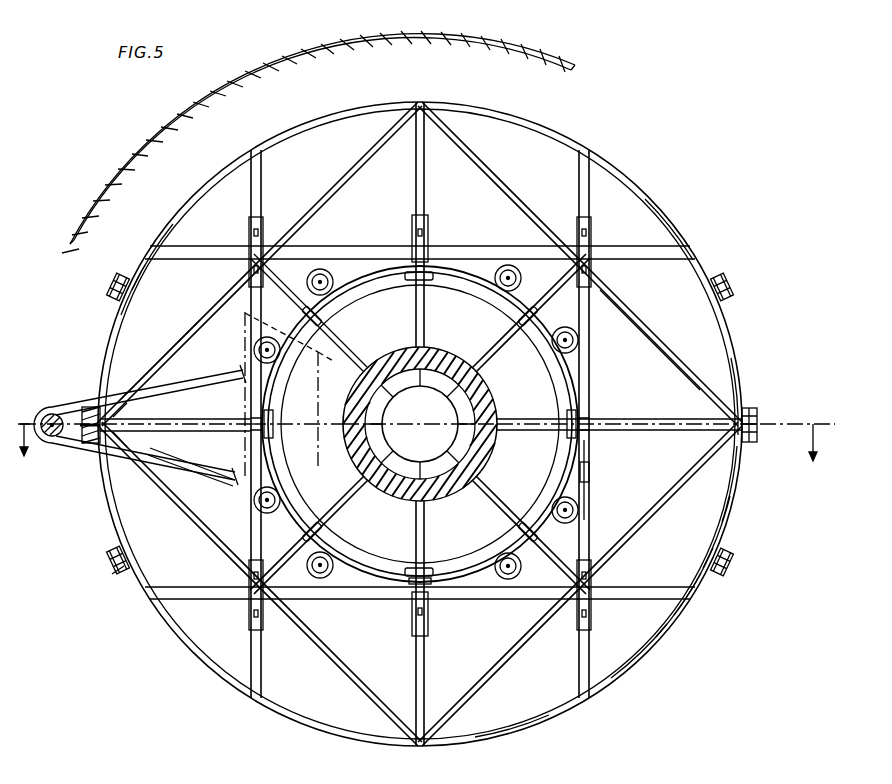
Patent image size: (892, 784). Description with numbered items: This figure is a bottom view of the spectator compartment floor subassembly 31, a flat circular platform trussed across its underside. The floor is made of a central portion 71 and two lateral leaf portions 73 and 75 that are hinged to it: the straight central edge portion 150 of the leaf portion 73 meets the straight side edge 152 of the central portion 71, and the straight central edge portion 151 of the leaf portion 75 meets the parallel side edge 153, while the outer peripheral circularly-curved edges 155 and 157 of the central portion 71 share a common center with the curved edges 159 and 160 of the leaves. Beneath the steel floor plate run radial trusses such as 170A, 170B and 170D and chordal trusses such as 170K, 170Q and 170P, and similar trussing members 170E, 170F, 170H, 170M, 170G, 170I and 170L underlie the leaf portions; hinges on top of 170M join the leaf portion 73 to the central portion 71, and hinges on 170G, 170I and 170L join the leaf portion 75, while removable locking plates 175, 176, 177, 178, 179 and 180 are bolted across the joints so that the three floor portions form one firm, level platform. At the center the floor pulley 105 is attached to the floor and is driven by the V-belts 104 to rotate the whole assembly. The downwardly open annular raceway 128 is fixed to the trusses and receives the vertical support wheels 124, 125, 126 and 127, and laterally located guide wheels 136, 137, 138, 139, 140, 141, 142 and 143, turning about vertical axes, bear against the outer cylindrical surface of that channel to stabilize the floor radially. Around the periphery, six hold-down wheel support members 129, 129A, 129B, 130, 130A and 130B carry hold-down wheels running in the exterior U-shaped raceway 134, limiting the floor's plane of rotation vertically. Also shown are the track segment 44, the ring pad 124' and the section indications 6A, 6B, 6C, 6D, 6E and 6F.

The arcuate track segment 44 is at (399, 34).
The outer peripheral circularly-curved edge 159 is at (592, 120).
The spectator compartment floor subassembly 31 is at (150, 611).
The outer peripheral circularly-curved edge 160 is at (532, 728).
The straight central edge portion 150 is at (165, 246).
The straight side edge 152 is at (160, 262).
The exterior U-shaped raceway 134 is at (744, 400).
The outer peripheral circularly-curved edge 157 is at (737, 486).
The central portion 71 is at (713, 530).
The straight side edge 153 is at (689, 579).
The straight central edge portion 151 is at (668, 600).
The lateral leaf portion 75 is at (636, 653).
The lateral leaf portion 73 is at (655, 237).
The truss member 170M is at (250, 204).
The truss member 170G is at (250, 669).
The trussing member 170H is at (579, 190).
The truss member 170L is at (582, 680).
The chordal truss 170Q is at (590, 493).
The radial truss 170D is at (193, 426).
The trussing member 170E is at (346, 178).
The trussing member 170F is at (482, 166).
The chordal truss 170P is at (176, 350).
The chordal truss 170K is at (640, 326).
The radial truss 170B is at (494, 501).
The radial truss 170A is at (412, 538).
The truss member 170I is at (417, 670).
The guide wheel 143 is at (332, 268).
The wheel 124 is at (420, 403).
The ring pad 124' is at (420, 316).
The wheel 126 is at (528, 518).
The wheel 127 is at (262, 418).
The wheel 125 is at (577, 420).
The annular raceway 128 is at (586, 478).
The floor pulley 105 is at (404, 464).
The guide wheel 136 is at (505, 265).
The guide wheel 137 is at (578, 348).
The guide wheel 138 is at (576, 516).
The guide wheel 139 is at (510, 582).
The guide wheel 140 is at (326, 580).
The guide wheel 141 is at (254, 350).
The guide wheel 142 is at (256, 504).
The removable locking plate 179 is at (249, 232).
The removable locking plate 178 is at (591, 241).
The removable locking plate 176 is at (249, 608).
The removable locking plate 177 is at (594, 608).
The removable locking plate 180 is at (412, 236).
The removable locking plate 175 is at (415, 630).
The hold-down wheel support member 130 is at (78, 404).
The V-belt 104 is at (166, 470).
The hold-down wheel support member 130A is at (109, 301).
The hold-down wheel support member 130B is at (104, 546).
The outer peripheral circularly-curved edge 155 is at (112, 568).
The hold-down wheel support member 129A is at (741, 296).
The hold-down wheel support member 129B is at (736, 562).
The hold-down wheel support member 129 is at (750, 443).
The section line 6A is at (132, 450).
The section line 6B is at (236, 432).
The section line 6C is at (245, 313).
The section line 6D is at (326, 352).
The section line 6E is at (320, 444).
The section line 6F is at (797, 453).